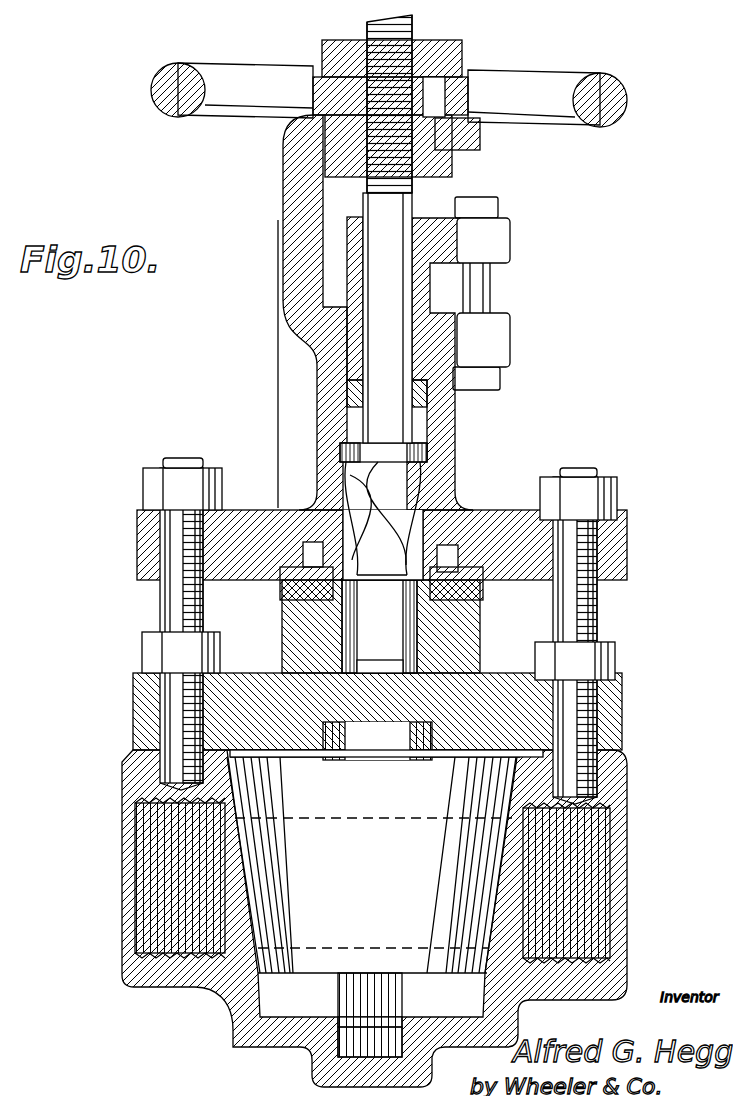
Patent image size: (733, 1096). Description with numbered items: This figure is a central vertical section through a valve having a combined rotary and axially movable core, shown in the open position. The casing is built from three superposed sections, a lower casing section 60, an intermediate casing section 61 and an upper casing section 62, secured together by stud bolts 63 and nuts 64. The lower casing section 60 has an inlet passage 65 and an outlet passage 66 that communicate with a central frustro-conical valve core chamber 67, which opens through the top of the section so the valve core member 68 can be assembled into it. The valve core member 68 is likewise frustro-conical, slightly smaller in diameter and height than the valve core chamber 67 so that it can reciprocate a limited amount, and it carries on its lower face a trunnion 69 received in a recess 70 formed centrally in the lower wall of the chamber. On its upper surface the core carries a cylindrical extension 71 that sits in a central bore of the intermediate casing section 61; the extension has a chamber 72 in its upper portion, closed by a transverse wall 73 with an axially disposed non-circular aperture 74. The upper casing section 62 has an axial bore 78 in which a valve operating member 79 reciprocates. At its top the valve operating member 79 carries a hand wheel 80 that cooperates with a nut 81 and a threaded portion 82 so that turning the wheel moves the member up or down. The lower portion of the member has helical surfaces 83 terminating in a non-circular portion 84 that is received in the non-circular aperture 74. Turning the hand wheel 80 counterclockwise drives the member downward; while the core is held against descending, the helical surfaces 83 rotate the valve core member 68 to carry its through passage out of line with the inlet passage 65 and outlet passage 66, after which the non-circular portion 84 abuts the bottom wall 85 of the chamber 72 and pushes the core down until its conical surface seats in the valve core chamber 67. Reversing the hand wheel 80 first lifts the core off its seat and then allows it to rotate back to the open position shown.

The lower casing section 60 is at (622, 979).
The intermediate casing section 61 is at (622, 716).
The upper casing section 62 is at (627, 540).
The stud bolts 63 is at (160, 598).
The nuts 64 is at (615, 657).
The inlet passage 65 is at (122, 890).
The outlet passage 66 is at (620, 913).
The valve core chamber 67 is at (240, 923).
The valve core member 68 is at (375, 865).
The trunnion 69 is at (338, 991).
The recess 70 is at (338, 1050).
The cylindrical extension 71 is at (377, 741).
The chamber 72 is at (381, 626).
The transverse wall 73 is at (430, 507).
The non-circular aperture 74 is at (337, 553).
The axial bore 78 is at (347, 410).
The valve operating member 79 is at (410, 218).
The hand wheel 80 is at (627, 100).
The nut 81 is at (452, 168).
The threaded portion 82 is at (412, 28).
The helical surfaces 83 is at (383, 518).
The non-circular portion 84 is at (379, 626).
The bottom wall 85 is at (378, 672).